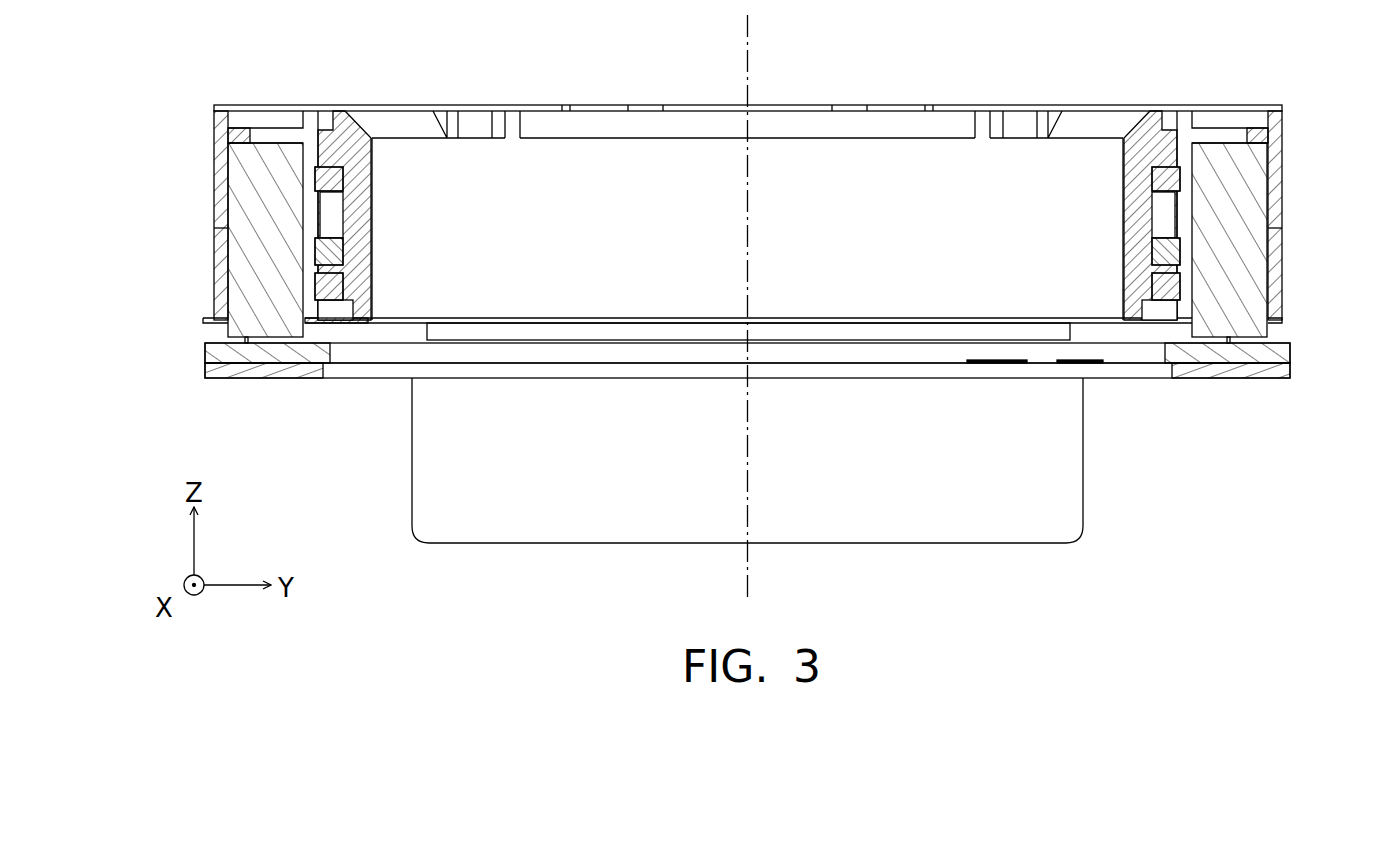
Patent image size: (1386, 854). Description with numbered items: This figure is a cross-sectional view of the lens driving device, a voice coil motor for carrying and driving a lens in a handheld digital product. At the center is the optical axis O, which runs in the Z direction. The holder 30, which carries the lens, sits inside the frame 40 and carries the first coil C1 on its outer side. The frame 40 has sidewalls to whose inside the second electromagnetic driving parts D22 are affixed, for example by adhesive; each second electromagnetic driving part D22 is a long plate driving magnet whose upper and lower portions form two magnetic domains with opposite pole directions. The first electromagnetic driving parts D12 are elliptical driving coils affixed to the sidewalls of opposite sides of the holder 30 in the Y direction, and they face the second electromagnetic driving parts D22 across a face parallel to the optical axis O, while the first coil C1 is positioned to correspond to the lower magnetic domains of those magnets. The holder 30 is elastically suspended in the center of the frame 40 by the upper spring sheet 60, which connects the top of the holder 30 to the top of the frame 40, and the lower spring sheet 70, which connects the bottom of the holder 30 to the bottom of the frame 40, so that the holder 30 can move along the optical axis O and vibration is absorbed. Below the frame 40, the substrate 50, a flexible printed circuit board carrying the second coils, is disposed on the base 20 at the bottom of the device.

The optical axis O is at (750, 299).
The base 20 is at (1293, 369).
The holder 30 is at (1152, 135).
The frame 40 is at (1270, 138).
The substrate 50 is at (1293, 352).
The upper spring sheet 60 is at (338, 107).
The lower spring sheet 70 is at (350, 324).
The first electromagnetic driving part D12 is at (330, 182).
The second electromagnetic driving part D22 is at (266, 250).
The first coil C1 is at (330, 285).